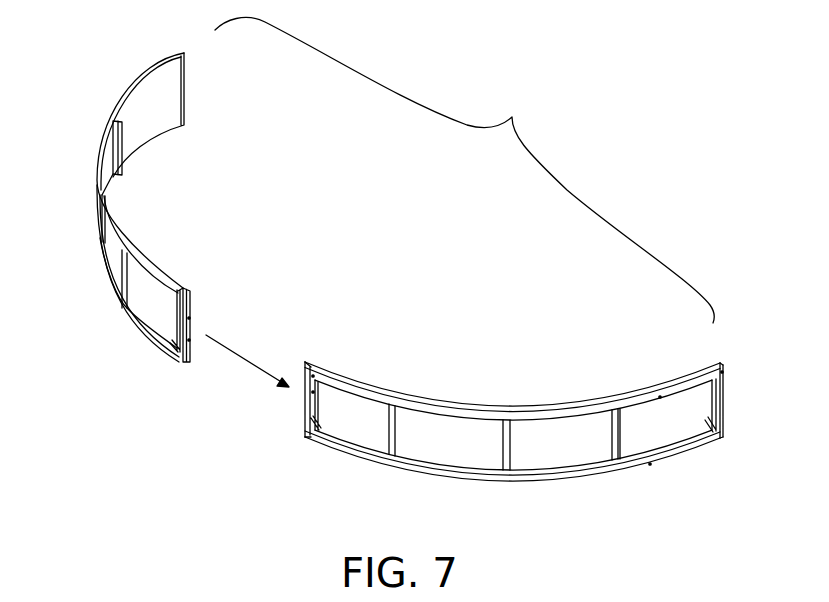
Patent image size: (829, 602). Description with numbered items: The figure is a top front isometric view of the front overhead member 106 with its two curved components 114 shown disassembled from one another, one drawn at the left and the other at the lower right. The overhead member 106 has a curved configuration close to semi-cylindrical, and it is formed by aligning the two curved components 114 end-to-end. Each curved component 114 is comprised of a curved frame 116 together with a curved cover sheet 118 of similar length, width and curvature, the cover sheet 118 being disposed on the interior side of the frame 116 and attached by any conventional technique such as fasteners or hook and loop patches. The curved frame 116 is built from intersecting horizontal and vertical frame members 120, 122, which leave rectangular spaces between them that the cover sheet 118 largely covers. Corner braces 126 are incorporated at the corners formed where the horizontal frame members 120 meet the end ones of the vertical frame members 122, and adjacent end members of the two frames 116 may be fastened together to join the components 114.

The front overhead member 106 is at (464, 170).
The curved component 114 is at (116, 104).
The curved frame 116 is at (120, 329).
The curved cover sheet 118 is at (156, 128).
The horizontal frame member 120 is at (130, 237).
The vertical frame member 122 is at (173, 317).
The corner brace 126 is at (168, 282).